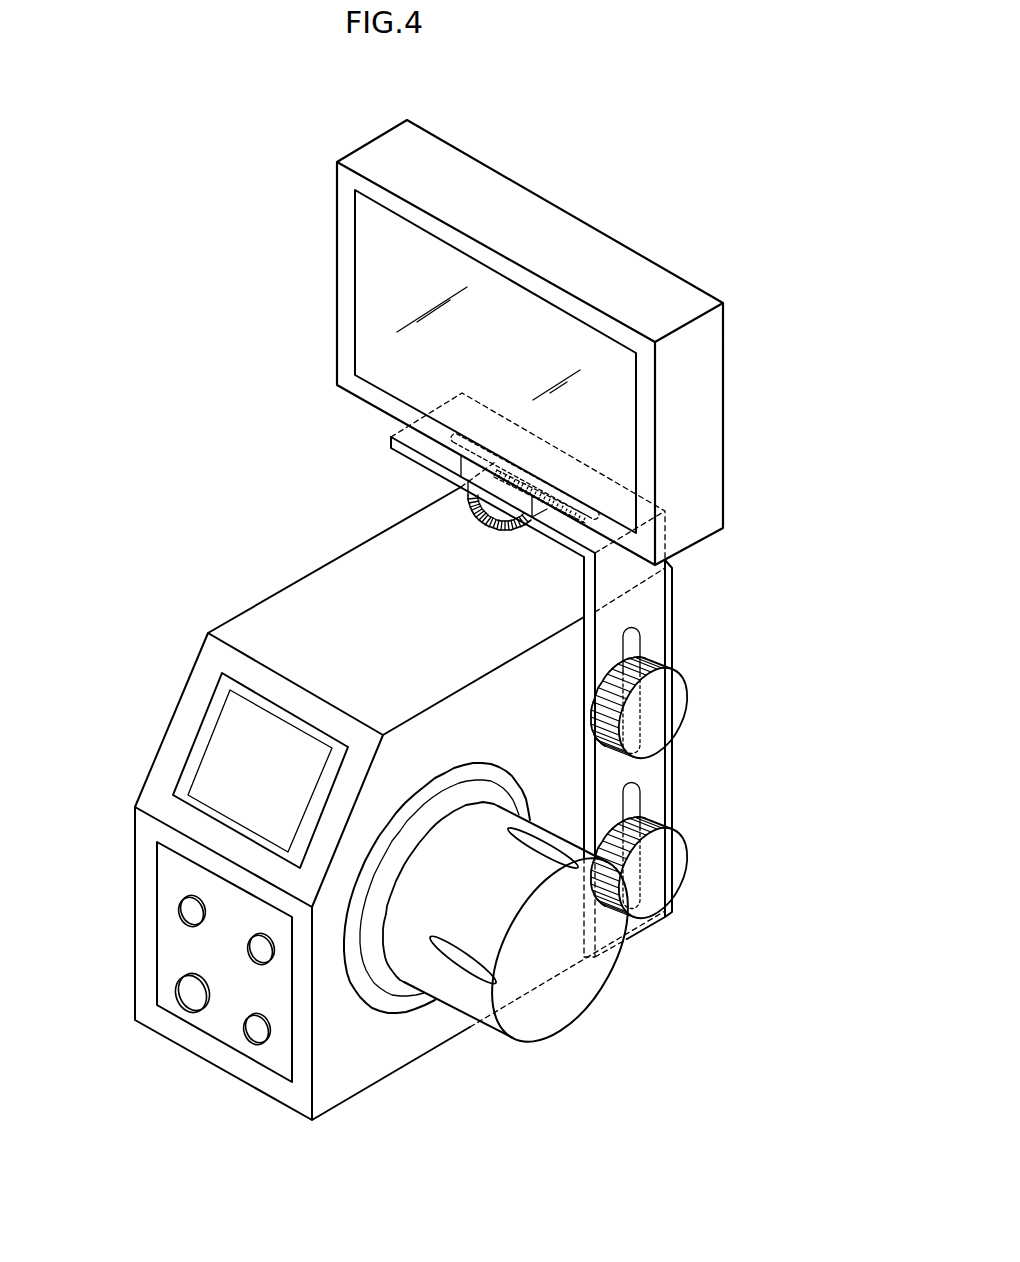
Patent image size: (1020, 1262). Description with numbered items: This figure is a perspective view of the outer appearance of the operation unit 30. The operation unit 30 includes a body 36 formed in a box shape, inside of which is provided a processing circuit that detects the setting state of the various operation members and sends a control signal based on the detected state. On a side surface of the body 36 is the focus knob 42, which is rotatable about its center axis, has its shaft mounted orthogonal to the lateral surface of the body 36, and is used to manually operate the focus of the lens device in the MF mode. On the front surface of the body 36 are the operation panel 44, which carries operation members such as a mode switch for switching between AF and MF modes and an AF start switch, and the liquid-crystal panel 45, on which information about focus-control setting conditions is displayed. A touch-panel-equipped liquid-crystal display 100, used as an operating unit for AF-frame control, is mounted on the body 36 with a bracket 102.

The operation unit 30 is at (372, 773).
The body 36 is at (308, 592).
The focus knob 42 is at (557, 1033).
The operation panel 44 is at (172, 937).
The liquid-crystal panel 45 is at (226, 744).
The touch-panel-equipped liquid-crystal display 100 is at (370, 309).
The bracket 102 is at (706, 593).